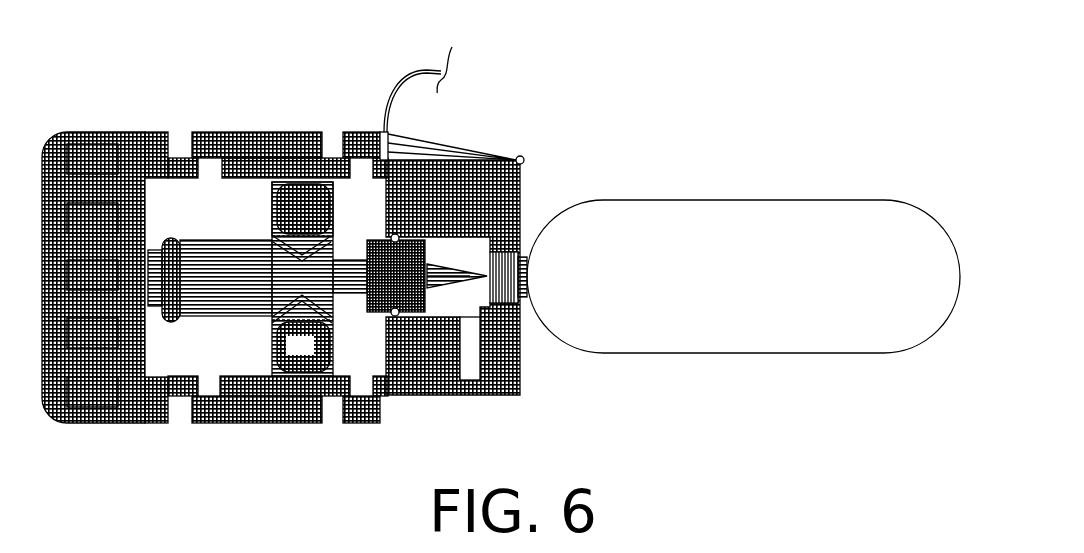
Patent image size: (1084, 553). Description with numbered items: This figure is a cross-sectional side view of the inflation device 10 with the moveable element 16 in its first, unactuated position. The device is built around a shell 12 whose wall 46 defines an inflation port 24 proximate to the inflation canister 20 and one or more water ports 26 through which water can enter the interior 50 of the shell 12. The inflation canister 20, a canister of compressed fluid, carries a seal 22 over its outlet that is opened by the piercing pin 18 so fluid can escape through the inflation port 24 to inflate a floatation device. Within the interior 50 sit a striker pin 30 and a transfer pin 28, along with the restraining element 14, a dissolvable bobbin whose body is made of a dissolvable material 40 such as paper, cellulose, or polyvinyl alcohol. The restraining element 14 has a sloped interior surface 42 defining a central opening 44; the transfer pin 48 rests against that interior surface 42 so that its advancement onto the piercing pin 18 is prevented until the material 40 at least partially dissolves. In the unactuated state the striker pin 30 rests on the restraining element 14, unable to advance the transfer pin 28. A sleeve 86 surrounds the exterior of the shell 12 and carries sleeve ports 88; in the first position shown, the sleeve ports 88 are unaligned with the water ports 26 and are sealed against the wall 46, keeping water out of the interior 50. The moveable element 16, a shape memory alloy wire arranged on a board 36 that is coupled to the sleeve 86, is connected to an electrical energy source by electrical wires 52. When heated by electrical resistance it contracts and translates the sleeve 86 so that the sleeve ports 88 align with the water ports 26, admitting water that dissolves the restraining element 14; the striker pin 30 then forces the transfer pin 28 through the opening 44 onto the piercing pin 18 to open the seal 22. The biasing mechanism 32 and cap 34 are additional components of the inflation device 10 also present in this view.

The inflation device 10 is at (672, 135).
The shell 12 is at (416, 398).
The restraining element 14 is at (287, 182).
The moveable element 16 is at (445, 147).
The piercing pin 18 is at (430, 240).
The inflation canister 20 is at (717, 340).
The seal 22 is at (500, 250).
The inflation port 24 is at (476, 407).
The water port 26 is at (214, 183).
The transfer pin 28 is at (281, 289).
The striker pin 30 is at (213, 287).
The biasing mechanism 32 is at (168, 238).
The cap 34 is at (78, 132).
The board 36 is at (390, 131).
The material 40 is at (287, 356).
The interior surface 42 is at (318, 303).
The opening 44 is at (324, 253).
The wall 46 is at (238, 160).
The transfer pin 48 is at (280, 247).
The interior 50 is at (237, 361).
The electrical wires 52 is at (422, 71).
The sleeve 86 is at (162, 414).
The sleeve ports 88 is at (182, 128).